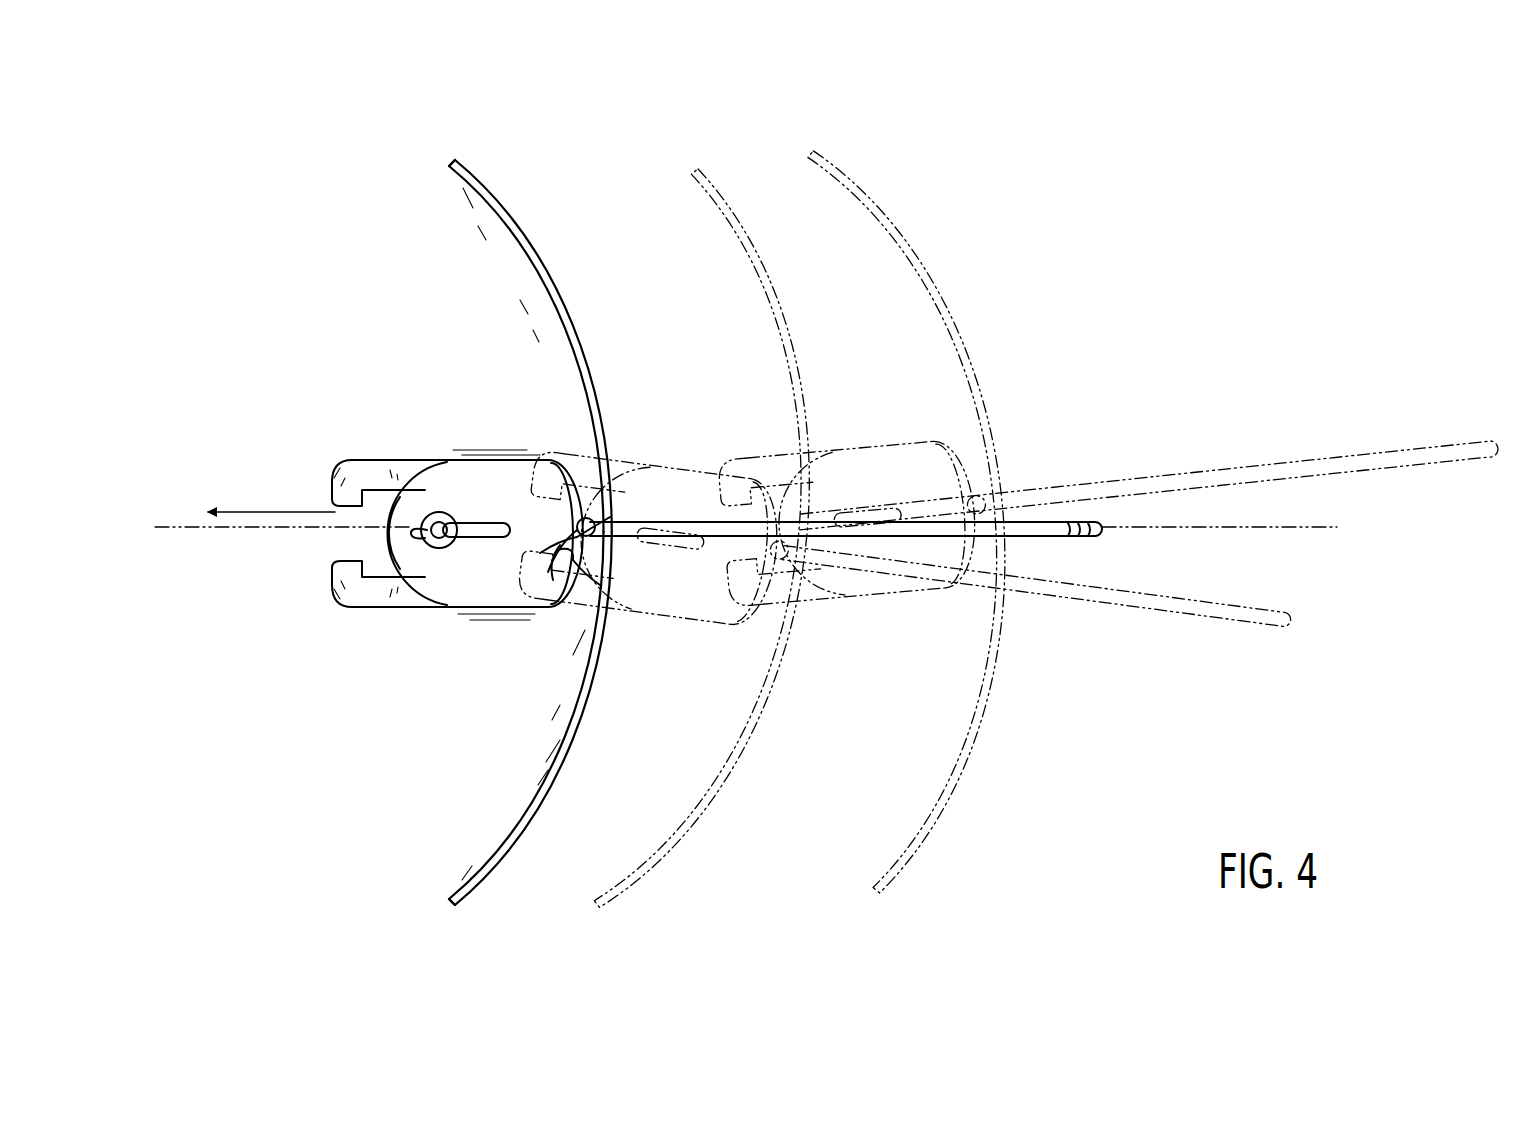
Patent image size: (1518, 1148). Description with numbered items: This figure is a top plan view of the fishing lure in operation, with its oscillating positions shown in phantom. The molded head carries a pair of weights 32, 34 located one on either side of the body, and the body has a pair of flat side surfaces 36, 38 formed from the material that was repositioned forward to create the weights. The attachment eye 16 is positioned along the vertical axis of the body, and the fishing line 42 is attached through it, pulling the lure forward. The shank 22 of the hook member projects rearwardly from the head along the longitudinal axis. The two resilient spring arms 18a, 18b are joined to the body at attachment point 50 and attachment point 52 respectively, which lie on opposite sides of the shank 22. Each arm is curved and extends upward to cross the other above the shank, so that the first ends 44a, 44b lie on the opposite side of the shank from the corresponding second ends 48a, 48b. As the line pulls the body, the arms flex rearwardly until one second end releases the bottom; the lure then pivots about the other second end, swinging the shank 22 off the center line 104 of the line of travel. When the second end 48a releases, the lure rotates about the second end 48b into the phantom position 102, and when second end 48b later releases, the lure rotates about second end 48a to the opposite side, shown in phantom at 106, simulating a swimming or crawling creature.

The attachment eye 16 is at (472, 524).
The spring arm 18a is at (506, 866).
The spring arm 18b is at (501, 185).
The shank 22 is at (1108, 483).
The weight 32 is at (370, 477).
The weight 34 is at (365, 590).
The flat side surface 36 is at (523, 610).
The flat side surface 38 is at (493, 458).
The fishing line 42 is at (183, 540).
The first end 44a is at (600, 585).
The first end 44b is at (610, 517).
The second end 48a is at (455, 905).
The second end 48b is at (453, 162).
The attachment point 50 is at (578, 518).
The attachment point 52 is at (548, 570).
The phantom lines 102 is at (763, 343).
The center line 104 is at (1213, 531).
The phantom position 106 is at (1066, 478).